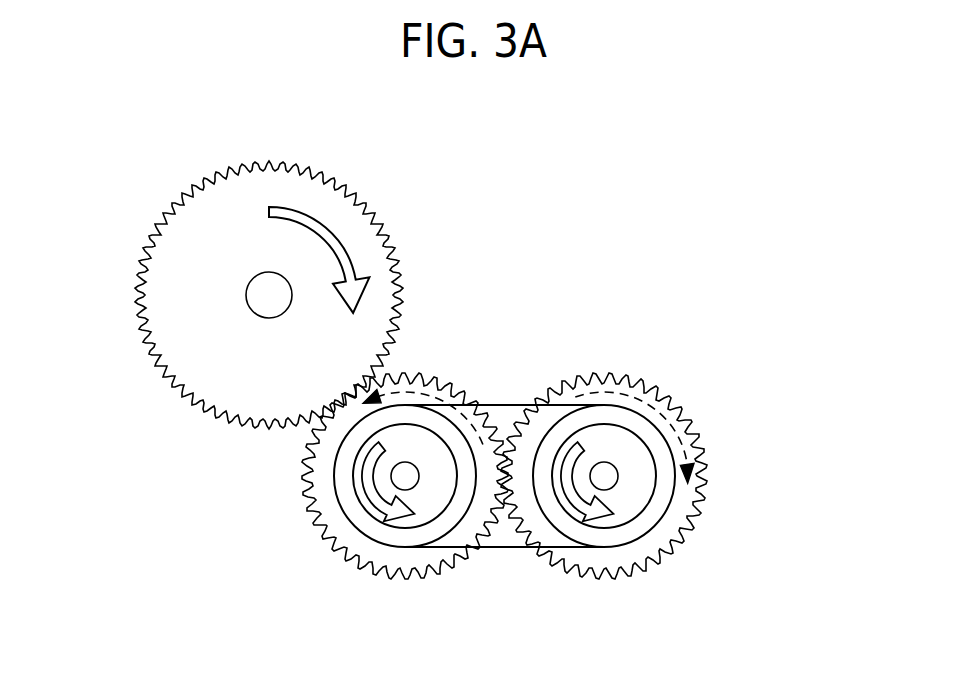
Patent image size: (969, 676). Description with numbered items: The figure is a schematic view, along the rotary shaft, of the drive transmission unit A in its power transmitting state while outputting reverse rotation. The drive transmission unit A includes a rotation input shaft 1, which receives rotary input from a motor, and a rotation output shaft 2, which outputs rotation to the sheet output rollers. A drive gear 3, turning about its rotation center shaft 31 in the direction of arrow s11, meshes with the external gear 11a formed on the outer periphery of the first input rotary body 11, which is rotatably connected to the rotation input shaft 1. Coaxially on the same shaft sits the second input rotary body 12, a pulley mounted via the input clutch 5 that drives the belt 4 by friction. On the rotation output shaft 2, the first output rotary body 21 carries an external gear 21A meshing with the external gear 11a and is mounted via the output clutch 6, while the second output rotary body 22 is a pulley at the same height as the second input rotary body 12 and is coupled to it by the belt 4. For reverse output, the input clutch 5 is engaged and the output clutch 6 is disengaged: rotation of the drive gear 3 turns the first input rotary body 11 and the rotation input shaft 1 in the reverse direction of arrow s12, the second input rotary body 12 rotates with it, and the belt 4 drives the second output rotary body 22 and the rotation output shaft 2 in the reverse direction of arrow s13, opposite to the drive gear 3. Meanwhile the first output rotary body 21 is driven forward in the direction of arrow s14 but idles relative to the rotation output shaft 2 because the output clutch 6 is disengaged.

The rotation input shaft 1 is at (412, 460).
The rotation output shaft 2 is at (612, 460).
The drive gear 3 is at (343, 178).
The belt 4 is at (513, 403).
The input clutch 5 is at (337, 500).
The output clutch 6 is at (700, 452).
The first input rotary body 11 is at (297, 493).
The external gear 11a is at (302, 463).
The second input rotary body 12 is at (347, 553).
The first output rotary body 21 is at (710, 500).
The external gear 21A is at (707, 467).
The second output rotary body 22 is at (640, 433).
The rotation center shaft 31 is at (269, 287).
The arrow indicating rotation direction of drive gear s11 is at (343, 247).
The arrow indicating reverse rotation of rotation input shaft s12 is at (395, 518).
The arrow indicating reverse rotation of rotation output shaft s13 is at (607, 513).
The arrow indicating forward rotation of first output rotary body s14 is at (683, 405).
The drive transmission unit A is at (525, 210).